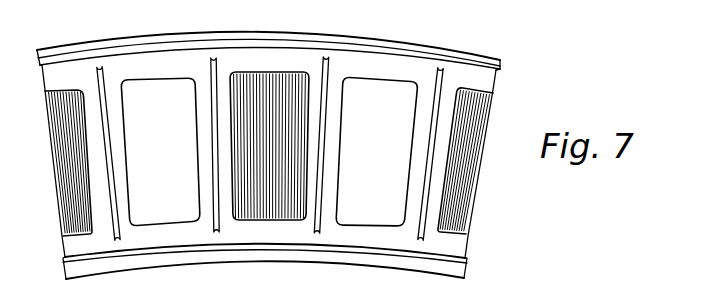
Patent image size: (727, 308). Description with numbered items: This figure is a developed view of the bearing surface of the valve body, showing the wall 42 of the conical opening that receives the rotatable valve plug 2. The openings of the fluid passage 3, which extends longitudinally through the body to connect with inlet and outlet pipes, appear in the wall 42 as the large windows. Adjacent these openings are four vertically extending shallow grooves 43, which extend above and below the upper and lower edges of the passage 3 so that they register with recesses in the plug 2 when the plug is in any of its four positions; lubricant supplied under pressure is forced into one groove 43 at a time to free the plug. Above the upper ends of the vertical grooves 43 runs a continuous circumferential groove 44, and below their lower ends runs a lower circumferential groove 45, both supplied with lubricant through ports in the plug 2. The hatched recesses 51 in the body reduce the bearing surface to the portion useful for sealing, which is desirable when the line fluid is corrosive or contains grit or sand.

The wall 42 is at (285, 57).
The continuous circumferential groove 44 is at (378, 50).
The lower circumferential groove 45 is at (193, 250).
The vertically extending shallow grooves 43 is at (210, 118).
The recesses 51 is at (85, 205).
The valve plug 2 is at (150, 220).
The fluid passage 3 is at (380, 220).